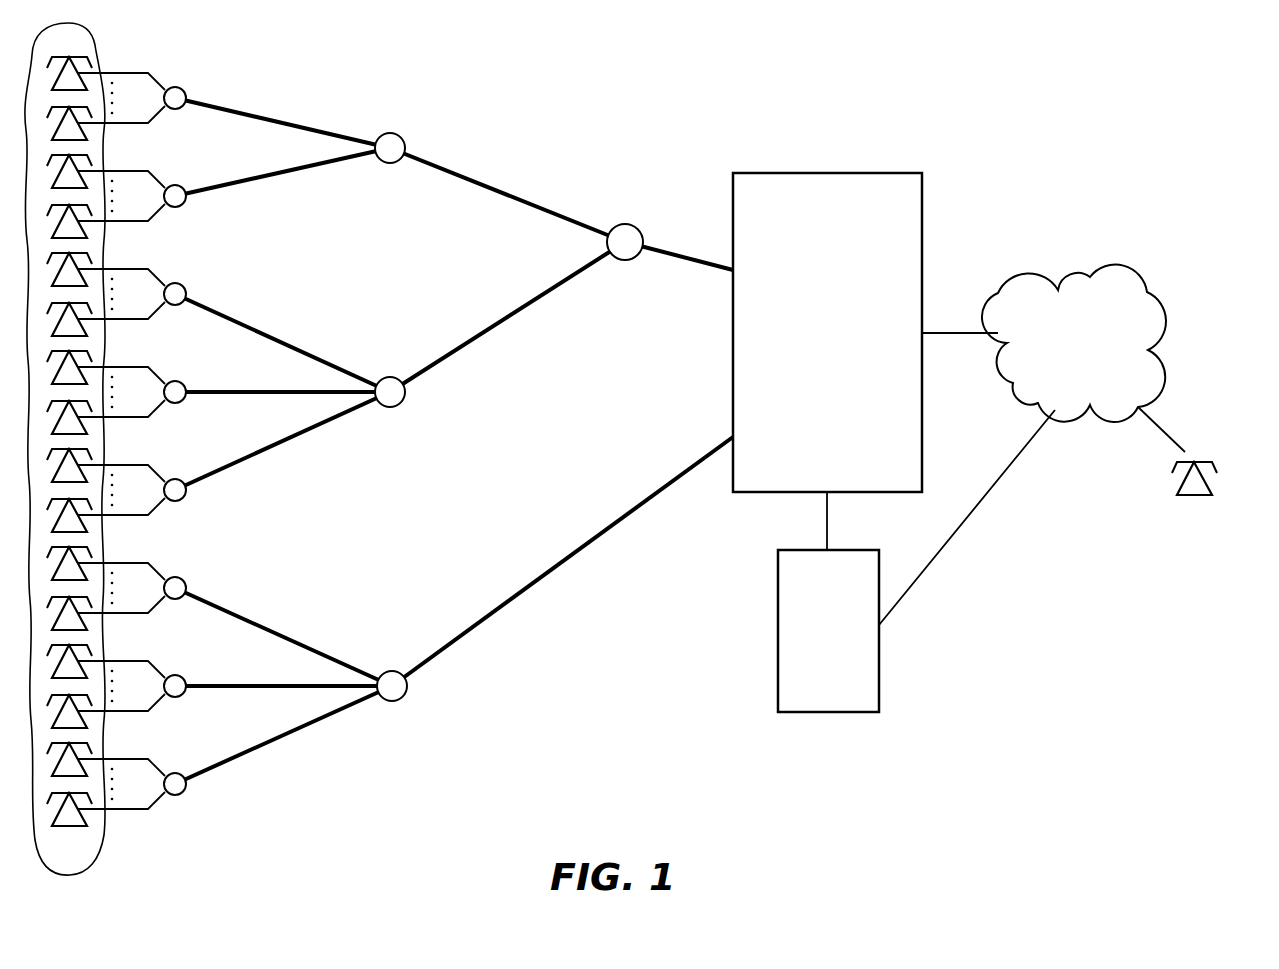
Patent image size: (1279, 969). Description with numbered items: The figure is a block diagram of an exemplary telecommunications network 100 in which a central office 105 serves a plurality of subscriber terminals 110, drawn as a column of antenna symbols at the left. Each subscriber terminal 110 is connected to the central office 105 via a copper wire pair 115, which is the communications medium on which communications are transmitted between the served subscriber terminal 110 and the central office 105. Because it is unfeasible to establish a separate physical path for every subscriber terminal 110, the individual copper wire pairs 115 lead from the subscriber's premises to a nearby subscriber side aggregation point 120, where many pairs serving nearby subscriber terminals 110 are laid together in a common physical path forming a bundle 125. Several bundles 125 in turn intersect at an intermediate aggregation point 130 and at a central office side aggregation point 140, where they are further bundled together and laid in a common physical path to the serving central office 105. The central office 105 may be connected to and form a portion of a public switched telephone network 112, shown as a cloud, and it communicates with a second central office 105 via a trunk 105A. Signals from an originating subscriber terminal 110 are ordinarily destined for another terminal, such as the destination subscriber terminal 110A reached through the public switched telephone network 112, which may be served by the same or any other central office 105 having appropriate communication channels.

The telecommunications network 100 is at (1040, 152).
The central office 105 is at (894, 442).
The trunk 105A is at (828, 514).
The subscriber terminal 110 is at (86, 873).
The destination subscriber terminal 110A is at (1198, 495).
The PSTN public switched telephone network 112 is at (1074, 343).
The copper wire pair 115 is at (127, 70).
The subscriber side aggregation point 120 is at (178, 87).
The bundle 125 is at (262, 114).
The intermediate aggregation point 130 is at (387, 132).
The central office side aggregation point 140 is at (623, 224).